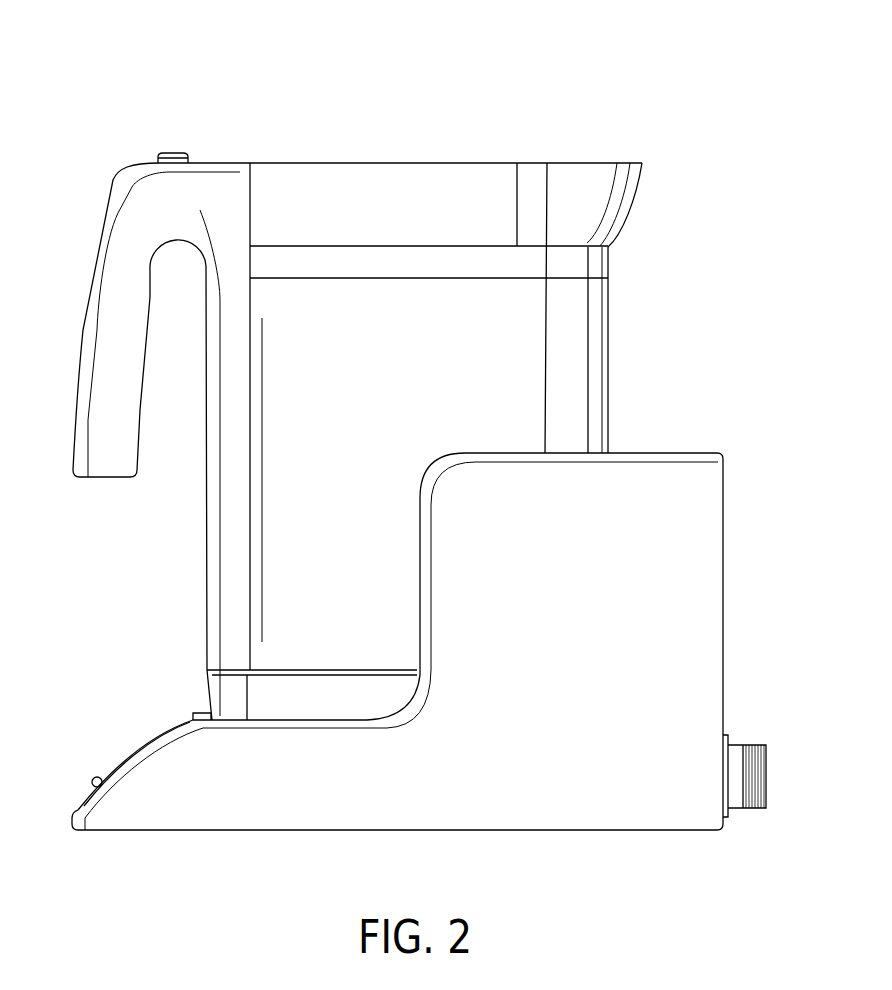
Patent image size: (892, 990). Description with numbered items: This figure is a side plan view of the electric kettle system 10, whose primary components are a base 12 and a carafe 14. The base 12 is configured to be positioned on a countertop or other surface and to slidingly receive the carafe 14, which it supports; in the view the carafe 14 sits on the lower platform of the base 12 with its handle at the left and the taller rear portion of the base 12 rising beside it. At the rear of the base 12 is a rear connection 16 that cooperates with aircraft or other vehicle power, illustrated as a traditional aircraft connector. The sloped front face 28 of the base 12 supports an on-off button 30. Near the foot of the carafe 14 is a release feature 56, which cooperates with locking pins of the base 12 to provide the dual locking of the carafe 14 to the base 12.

The electric kettle system 10 is at (671, 86).
The base 12 is at (570, 594).
The carafe 14 is at (360, 394).
The rear connection 16 is at (767, 772).
The front face 28 is at (134, 751).
The on-off button 30 is at (91, 783).
The release feature 56 is at (200, 712).